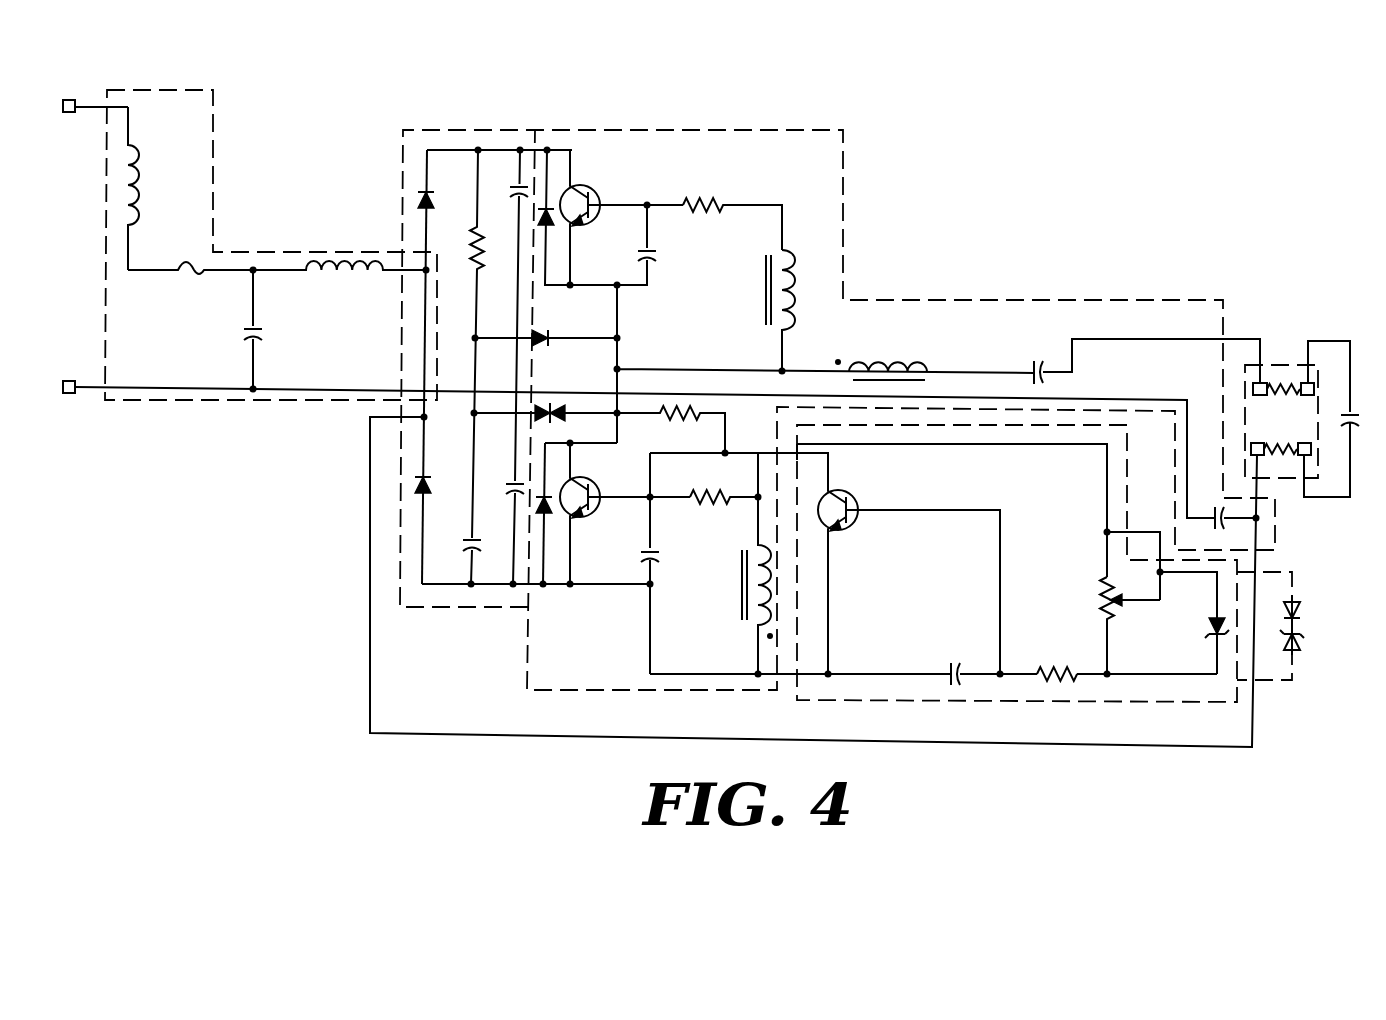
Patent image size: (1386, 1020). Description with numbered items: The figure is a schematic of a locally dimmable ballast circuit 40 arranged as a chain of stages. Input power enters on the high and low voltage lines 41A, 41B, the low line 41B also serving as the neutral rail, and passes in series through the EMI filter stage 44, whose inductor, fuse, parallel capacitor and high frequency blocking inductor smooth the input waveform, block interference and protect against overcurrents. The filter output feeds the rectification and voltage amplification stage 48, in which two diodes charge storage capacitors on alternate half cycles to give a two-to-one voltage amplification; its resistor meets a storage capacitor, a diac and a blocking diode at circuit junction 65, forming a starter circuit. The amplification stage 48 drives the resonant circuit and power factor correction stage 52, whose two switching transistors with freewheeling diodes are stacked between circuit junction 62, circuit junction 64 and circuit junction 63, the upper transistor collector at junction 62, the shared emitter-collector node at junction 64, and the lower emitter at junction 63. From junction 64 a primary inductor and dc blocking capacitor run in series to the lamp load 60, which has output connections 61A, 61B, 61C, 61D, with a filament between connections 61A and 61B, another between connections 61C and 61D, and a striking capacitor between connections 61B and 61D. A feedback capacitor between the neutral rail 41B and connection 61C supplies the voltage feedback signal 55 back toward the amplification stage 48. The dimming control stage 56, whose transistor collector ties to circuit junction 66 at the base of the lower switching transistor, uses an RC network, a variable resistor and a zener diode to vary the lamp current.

The ballast circuit 40 is at (1020, 91).
The high voltage input line 41A is at (92, 104).
The low voltage input line 41B is at (80, 398).
The EMI filter stage 44 is at (238, 401).
The rectification and voltage amplification stage 48 is at (408, 144).
The resonant circuit and power factor correction stage 52 is at (820, 138).
The voltage feedback signal 55 is at (480, 737).
The dimming control stage 56 is at (880, 690).
The lamp load 60 is at (1289, 342).
The output connection 61A is at (1249, 389).
The output connection 61B is at (1308, 375).
The output connection 61C is at (1259, 456).
The output connection 61D is at (1311, 449).
The circuit junction 62 is at (478, 150).
The circuit junction 63 is at (473, 587).
The circuit junction 64 is at (620, 339).
The circuit junction 65 is at (473, 340).
The circuit junction 66 is at (648, 496).